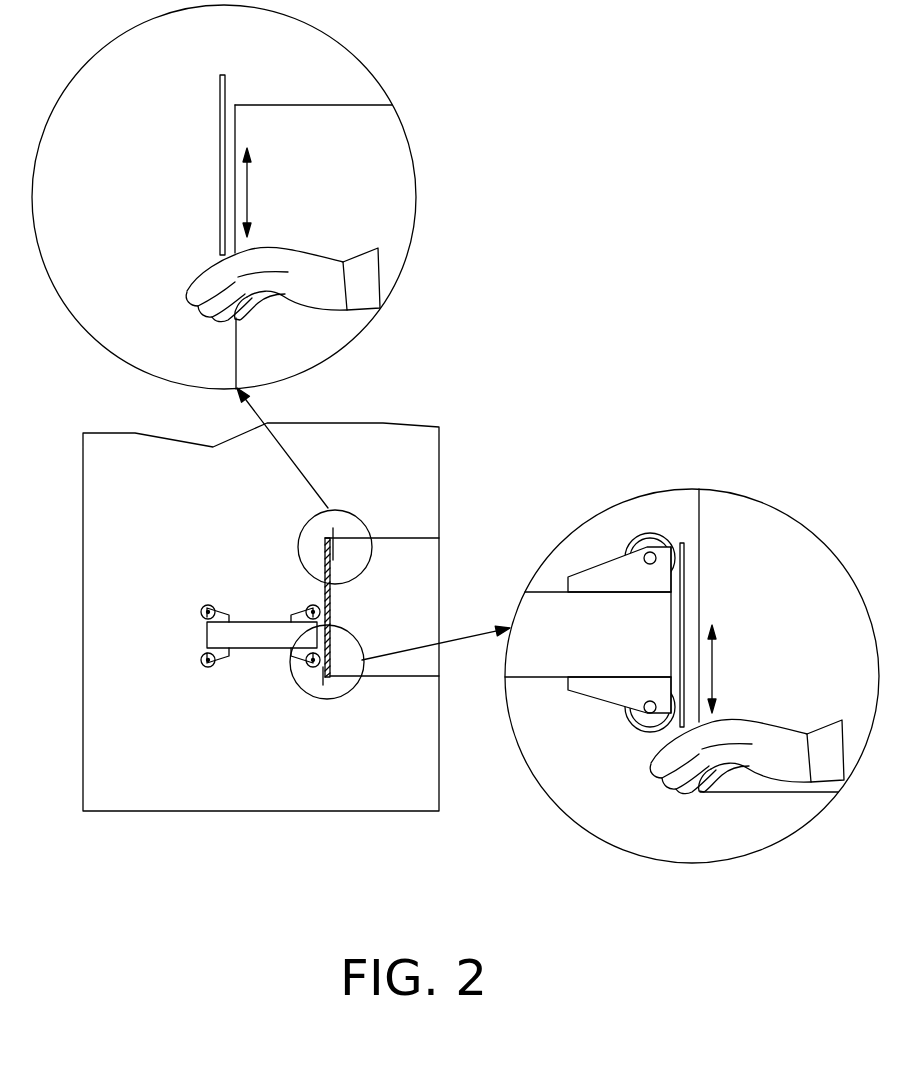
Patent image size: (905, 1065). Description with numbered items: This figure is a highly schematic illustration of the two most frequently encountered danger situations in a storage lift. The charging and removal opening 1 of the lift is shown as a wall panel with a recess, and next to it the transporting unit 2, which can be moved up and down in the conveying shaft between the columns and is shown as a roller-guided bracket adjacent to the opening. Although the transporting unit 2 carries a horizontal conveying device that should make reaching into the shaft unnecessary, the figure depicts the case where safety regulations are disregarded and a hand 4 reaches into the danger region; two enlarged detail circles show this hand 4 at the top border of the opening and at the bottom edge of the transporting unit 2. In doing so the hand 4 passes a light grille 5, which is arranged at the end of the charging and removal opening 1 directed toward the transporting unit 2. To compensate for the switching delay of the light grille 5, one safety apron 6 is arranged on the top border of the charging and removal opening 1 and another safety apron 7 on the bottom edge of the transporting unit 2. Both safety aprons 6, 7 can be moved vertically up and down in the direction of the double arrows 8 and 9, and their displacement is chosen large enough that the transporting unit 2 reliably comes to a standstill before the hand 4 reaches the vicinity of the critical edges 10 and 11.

The charging and removal opening 1 is at (405, 612).
The transporting unit 2 is at (265, 633).
The hand 4 is at (310, 278).
The light grille 5 is at (325, 592).
The safety apron 6 is at (220, 158).
The safety apron 7 is at (315, 670).
The double arrow 8 is at (247, 188).
The double arrow 9 is at (712, 670).
The critical edge 10 is at (237, 102).
The critical edge 11 is at (700, 792).